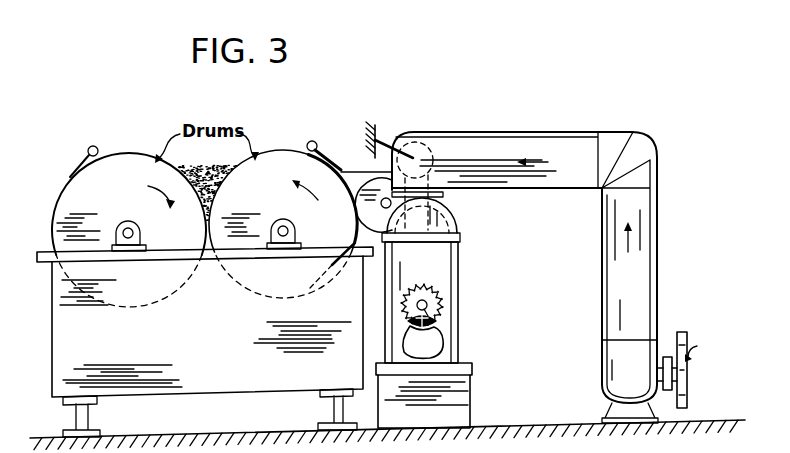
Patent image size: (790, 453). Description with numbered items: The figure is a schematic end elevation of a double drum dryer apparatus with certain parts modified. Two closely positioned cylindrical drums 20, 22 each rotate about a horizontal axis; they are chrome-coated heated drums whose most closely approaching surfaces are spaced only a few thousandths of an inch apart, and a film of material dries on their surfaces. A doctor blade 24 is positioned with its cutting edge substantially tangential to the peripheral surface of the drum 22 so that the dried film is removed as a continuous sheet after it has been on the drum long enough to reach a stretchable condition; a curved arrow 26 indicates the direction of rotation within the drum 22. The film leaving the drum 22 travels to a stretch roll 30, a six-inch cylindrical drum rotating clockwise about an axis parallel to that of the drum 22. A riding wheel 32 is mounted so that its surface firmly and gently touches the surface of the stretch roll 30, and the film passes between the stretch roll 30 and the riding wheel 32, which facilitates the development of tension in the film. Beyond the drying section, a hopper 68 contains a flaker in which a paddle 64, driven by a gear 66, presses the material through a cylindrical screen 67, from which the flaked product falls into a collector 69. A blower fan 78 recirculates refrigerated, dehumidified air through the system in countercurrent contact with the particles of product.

The cylindrical drum 20 is at (124, 195).
The cylindrical drum 22 is at (260, 195).
The doctor blade 24 is at (331, 160).
The direction of rotation arrow 26 is at (317, 188).
The stretch roll 30 is at (368, 226).
The riding wheel 32 is at (415, 142).
The paddle 64 is at (438, 318).
The gear 66 is at (440, 300).
The cylindrical screen 67 is at (440, 340).
The hopper 68 is at (454, 268).
The collector 69 is at (471, 394).
The fan 78 is at (690, 389).